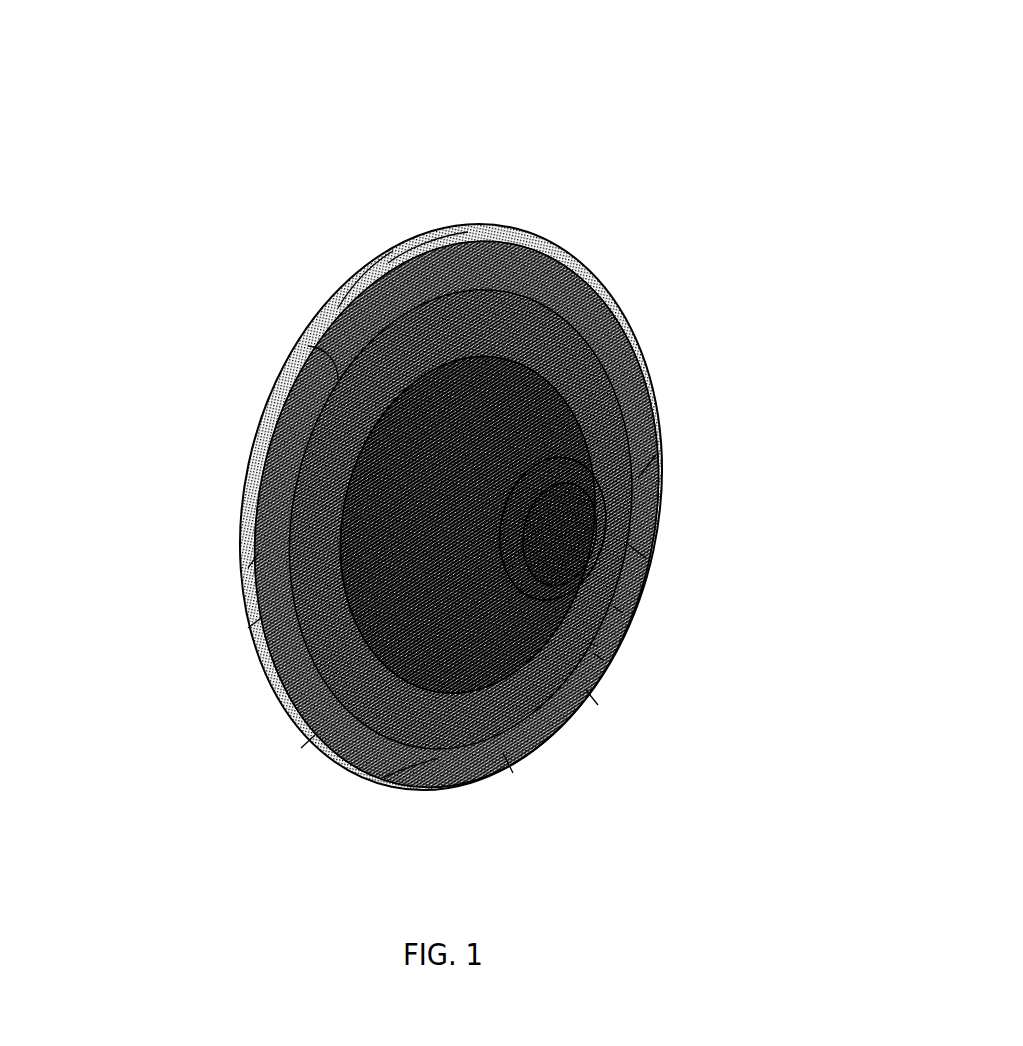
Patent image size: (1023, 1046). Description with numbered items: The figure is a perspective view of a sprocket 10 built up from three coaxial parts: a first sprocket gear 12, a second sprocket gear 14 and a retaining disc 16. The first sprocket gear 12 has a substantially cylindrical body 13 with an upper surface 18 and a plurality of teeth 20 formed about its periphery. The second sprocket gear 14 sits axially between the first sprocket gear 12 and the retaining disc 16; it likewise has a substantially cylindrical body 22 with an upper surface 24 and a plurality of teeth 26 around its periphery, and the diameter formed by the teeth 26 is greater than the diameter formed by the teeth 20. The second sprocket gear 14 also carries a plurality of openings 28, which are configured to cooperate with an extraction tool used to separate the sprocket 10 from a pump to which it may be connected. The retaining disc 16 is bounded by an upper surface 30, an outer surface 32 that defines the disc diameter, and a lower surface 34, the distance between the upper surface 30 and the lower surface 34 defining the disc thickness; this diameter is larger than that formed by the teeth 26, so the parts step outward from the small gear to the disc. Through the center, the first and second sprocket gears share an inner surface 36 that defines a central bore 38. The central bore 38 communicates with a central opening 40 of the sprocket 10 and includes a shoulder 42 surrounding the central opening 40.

The sprocket 10 is at (884, 128).
The first sprocket gear 12 is at (640, 525).
The cylindrical body 13 is at (293, 740).
The second sprocket gear 14 is at (622, 318).
The retaining disc 16 is at (572, 248).
The upper surface 18 is at (595, 652).
The teeth 20 is at (590, 697).
The cylindrical body 22 is at (240, 560).
The upper surface 24 is at (505, 765).
The teeth 26 is at (240, 620).
The openings 28 is at (375, 770).
The upper surface 30 is at (300, 338).
The outer surface 32 is at (379, 262).
The lower surface 34 is at (402, 242).
The inner surface 36 is at (648, 447).
The central bore 38 is at (638, 550).
The central opening 40 is at (590, 638).
The shoulder 42 is at (615, 605).